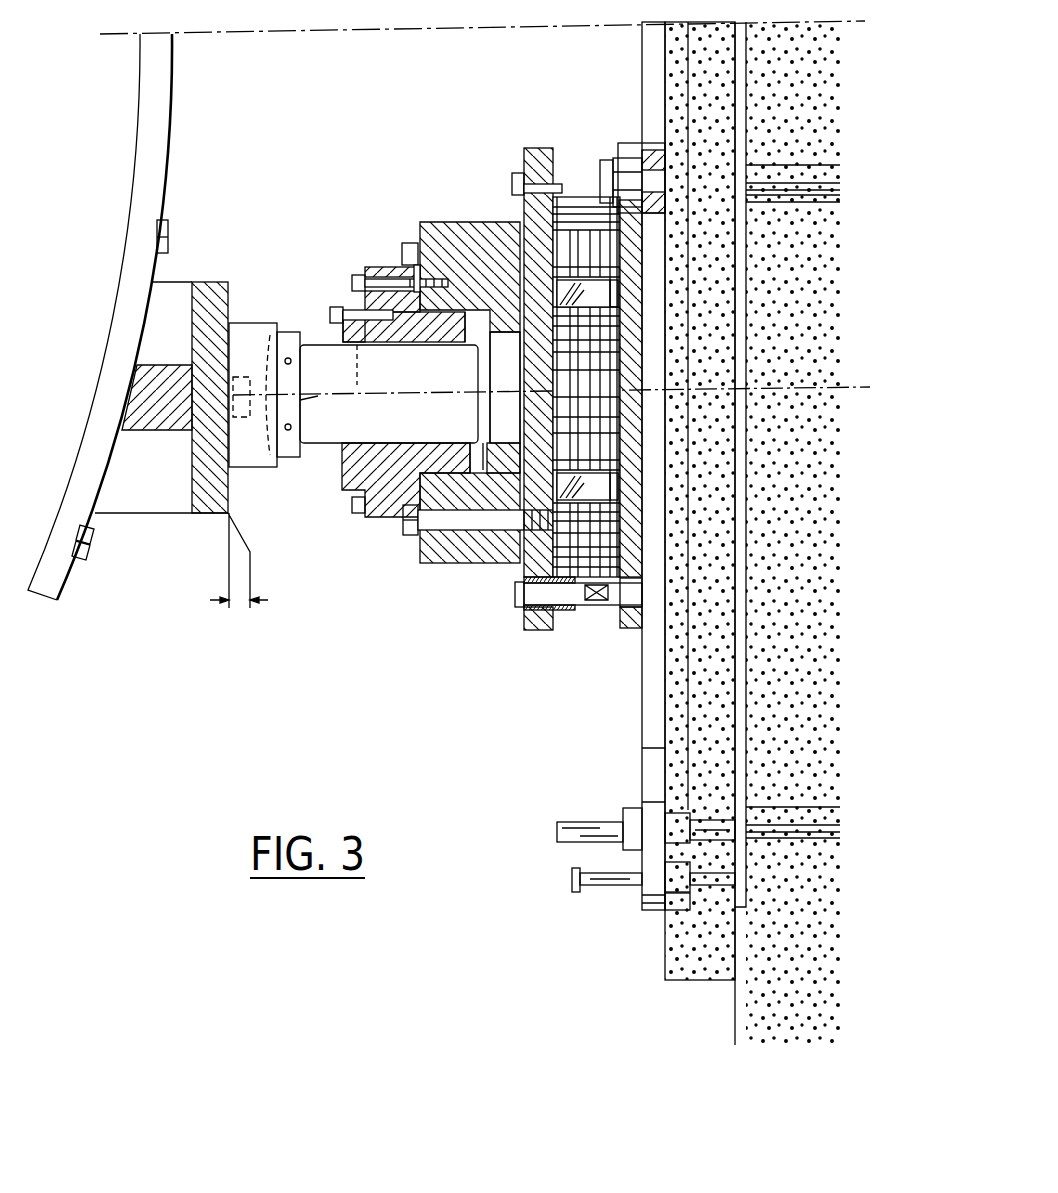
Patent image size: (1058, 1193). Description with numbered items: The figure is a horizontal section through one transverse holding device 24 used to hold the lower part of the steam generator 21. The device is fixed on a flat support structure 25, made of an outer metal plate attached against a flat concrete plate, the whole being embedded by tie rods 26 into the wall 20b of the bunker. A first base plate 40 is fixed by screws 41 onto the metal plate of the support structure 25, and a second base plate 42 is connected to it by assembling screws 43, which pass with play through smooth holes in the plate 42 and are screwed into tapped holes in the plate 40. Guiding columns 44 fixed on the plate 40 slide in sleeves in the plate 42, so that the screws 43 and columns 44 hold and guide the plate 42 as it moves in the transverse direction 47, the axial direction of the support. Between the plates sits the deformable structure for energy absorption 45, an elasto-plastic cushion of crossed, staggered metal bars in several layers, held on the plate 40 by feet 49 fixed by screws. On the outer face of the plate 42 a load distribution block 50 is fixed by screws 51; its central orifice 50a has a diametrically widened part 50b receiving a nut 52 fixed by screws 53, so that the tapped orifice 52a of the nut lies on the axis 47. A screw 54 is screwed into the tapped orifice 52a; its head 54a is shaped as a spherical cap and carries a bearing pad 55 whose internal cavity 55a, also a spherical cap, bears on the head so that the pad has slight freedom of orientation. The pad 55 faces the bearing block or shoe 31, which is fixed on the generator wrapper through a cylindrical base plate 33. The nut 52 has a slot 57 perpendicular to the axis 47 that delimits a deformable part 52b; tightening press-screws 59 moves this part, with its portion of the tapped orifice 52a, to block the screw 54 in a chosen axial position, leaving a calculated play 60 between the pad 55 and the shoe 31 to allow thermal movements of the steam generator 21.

The wall 20b is at (800, 642).
The steam generator 21 is at (77, 331).
The transverse holding device 24 is at (402, 186).
The support structure 25 is at (640, 773).
The embedding tie rods 26 is at (786, 815).
The bearing block or shoe 31 is at (195, 484).
The cylindrical base plate 33 is at (66, 566).
The first base plate 40 is at (645, 565).
The screws 41 is at (640, 160).
The second base plate 42 is at (532, 560).
The assembling screws 43 is at (543, 176).
The guiding columns 44 is at (566, 598).
The deformable structure for energy absorption 45 is at (600, 404).
The transverse direction 47 is at (788, 390).
The feet 49 is at (597, 287).
The load distribution block 50 is at (432, 245).
The central orifice 50a is at (538, 388).
The diametrically widened part 50b is at (450, 477).
The screws 51 is at (410, 242).
The nut 52 is at (341, 482).
The tapped orifice 52a is at (450, 343).
The deformable part 52b is at (330, 322).
The screws 53 is at (351, 278).
The screw 54 is at (386, 427).
The head 54a is at (327, 400).
The bearing pad 55 is at (236, 330).
The internal cavity 55a is at (273, 440).
The slot 57 is at (362, 378).
The press-screws 59 is at (335, 312).
The play 60 is at (239, 579).